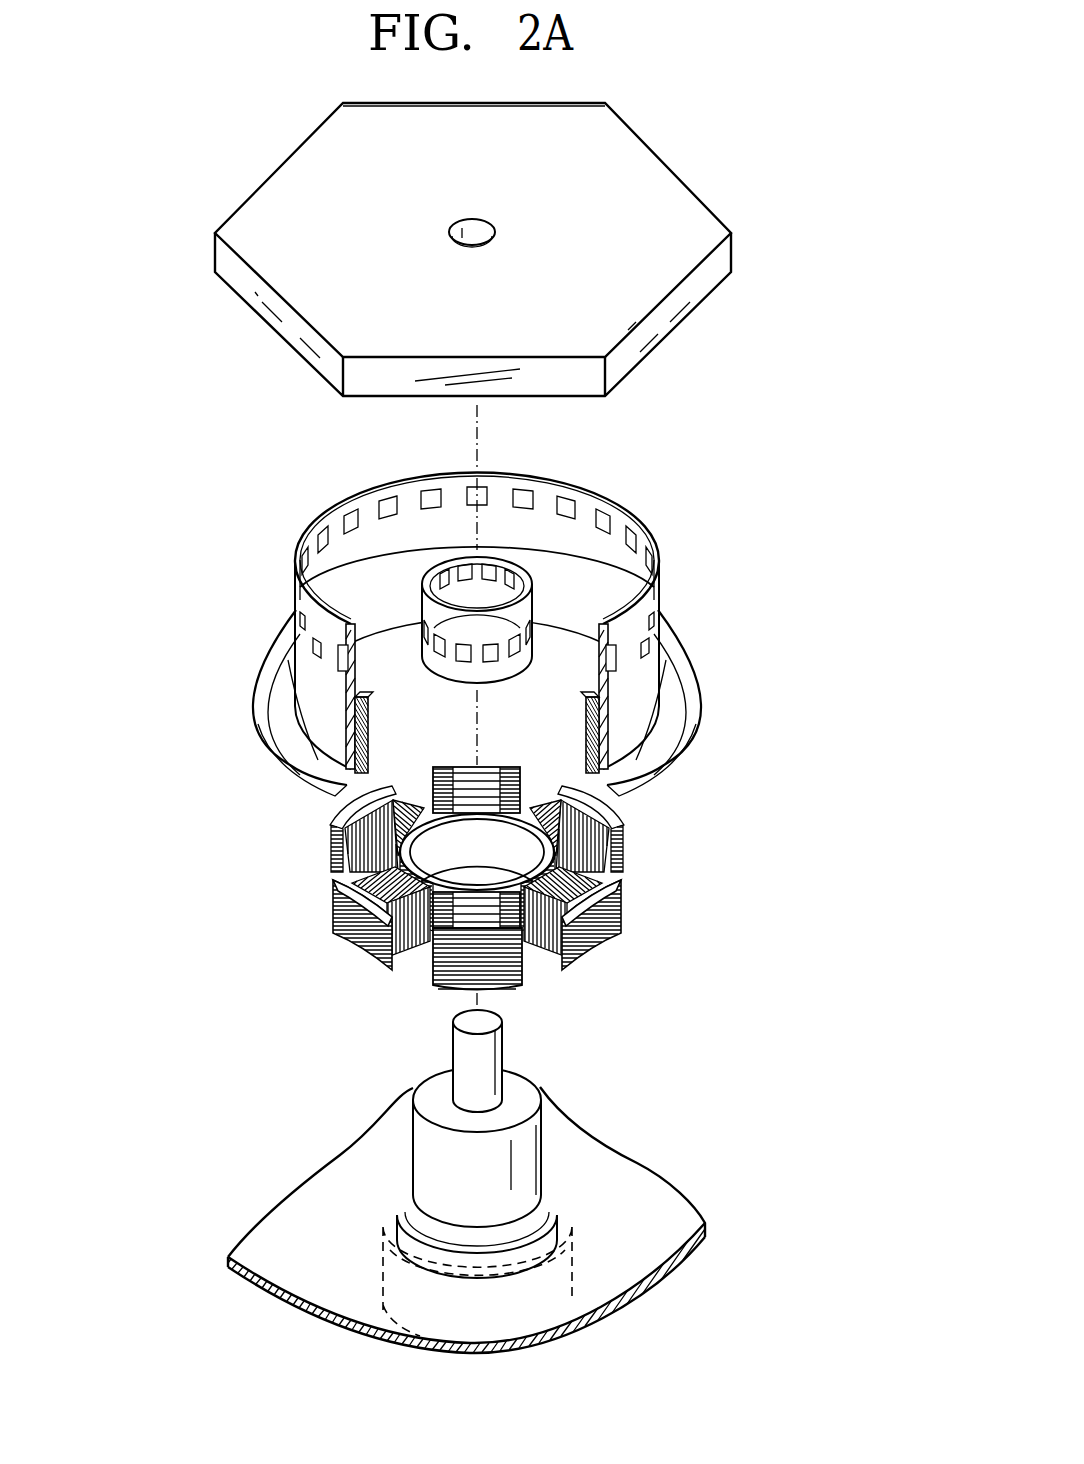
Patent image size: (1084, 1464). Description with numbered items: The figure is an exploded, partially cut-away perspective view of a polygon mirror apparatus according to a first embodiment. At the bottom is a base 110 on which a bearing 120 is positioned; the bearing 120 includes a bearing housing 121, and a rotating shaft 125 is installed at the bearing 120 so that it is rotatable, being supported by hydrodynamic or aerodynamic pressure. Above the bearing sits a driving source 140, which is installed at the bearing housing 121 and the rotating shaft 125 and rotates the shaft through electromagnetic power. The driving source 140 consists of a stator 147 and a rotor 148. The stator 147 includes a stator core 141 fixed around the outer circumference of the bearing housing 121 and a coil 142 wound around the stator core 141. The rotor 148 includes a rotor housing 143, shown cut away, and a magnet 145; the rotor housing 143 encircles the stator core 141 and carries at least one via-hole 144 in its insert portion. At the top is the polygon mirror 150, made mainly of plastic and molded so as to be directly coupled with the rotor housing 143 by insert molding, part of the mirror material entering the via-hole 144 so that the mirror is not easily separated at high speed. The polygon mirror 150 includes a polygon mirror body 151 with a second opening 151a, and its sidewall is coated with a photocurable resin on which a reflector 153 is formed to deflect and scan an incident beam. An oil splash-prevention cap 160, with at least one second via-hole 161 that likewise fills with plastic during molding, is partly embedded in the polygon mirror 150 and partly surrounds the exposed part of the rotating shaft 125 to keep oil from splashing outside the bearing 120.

The base 110 is at (687, 1210).
The bearing 120 is at (541, 1174).
The bearing housing 121 is at (545, 1162).
The rotating shaft 125 is at (498, 1046).
The driving source 140 is at (508, 878).
The stator core 141 is at (620, 937).
The coil 142 is at (620, 880).
The rotor housing 143 is at (643, 687).
The via-hole 144 is at (660, 621).
The magnet 145 is at (368, 737).
The stator 147 is at (437, 878).
The rotor 148 is at (451, 634).
The polygon mirror 150 is at (503, 245).
The polygon mirror body 151 is at (650, 175).
The second opening 151a is at (473, 226).
The reflector 153 is at (704, 288).
The oil splash-prevention cap 160 is at (471, 654).
The second via-hole 161 is at (448, 633).